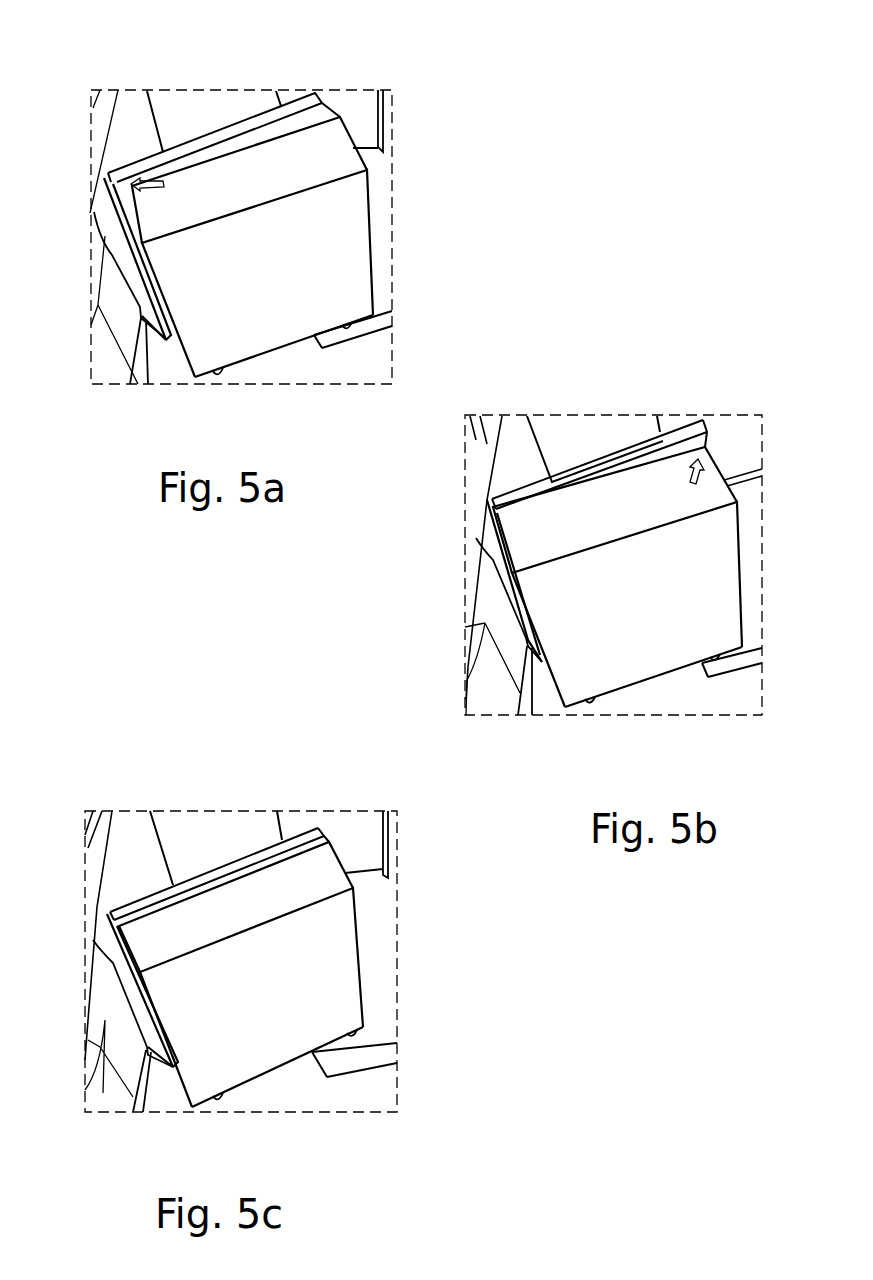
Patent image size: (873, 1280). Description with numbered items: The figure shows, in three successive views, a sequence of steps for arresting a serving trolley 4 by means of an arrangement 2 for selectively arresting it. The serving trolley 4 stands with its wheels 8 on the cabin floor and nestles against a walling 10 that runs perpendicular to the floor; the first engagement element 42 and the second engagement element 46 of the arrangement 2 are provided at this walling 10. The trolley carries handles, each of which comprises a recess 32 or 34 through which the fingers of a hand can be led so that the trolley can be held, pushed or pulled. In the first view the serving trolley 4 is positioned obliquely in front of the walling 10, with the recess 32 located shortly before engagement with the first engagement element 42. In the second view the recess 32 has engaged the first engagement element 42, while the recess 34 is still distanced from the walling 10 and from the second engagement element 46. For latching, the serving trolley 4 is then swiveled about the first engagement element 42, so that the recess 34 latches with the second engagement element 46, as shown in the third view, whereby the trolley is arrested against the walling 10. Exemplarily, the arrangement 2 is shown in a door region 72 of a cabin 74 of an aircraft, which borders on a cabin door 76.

In FIG. 5A, the arrangement 2 is at (362, 104).
In FIG. 5B, the arrangement 2 is at (731, 437).
In FIG. 5C, the arrangement 2 is at (308, 821).
In FIG. 5A, the serving trolley 4 is at (358, 236).
In FIG. 5B, the serving trolley 4 is at (727, 573).
In FIG. 5C, the serving trolley 4 is at (350, 963).
In FIG. 5A, the wheels 8 is at (218, 378).
In FIG. 5B, the wheels 8 is at (590, 708).
In FIG. 5C, the wheels 8 is at (219, 1103).
In FIG. 5A, the walling 10 is at (122, 138).
In FIG. 5B, the walling 10 is at (505, 471).
In FIG. 5C, the walling 10 is at (127, 871).
In FIG. 5A, the recess 32 is at (122, 193).
In FIG. 5B, the recess 32 is at (505, 525).
In FIG. 5C, the recess 32 is at (113, 931).
In FIG. 5A, the recess 34 is at (362, 135).
In FIG. 5B, the recess 34 is at (730, 471).
In FIG. 5C, the recess 34 is at (350, 865).
In FIG. 5A, the first engagement element 42 is at (112, 180).
In FIG. 5B, the first engagement element 42 is at (488, 503).
In FIG. 5C, the first engagement element 42 is at (104, 912).
In FIG. 5B, the second engagement element 46 is at (708, 414).
In FIG. 5C, the second engagement element 46 is at (331, 828).
In FIG. 5A, the door region 72 is at (291, 357).
In FIG. 5B, the door region 72 is at (695, 688).
In FIG. 5C, the door region 72 is at (302, 1083).
In FIG. 5A, the cabin 74 is at (384, 315).
In FIG. 5B, the cabin 74 is at (748, 653).
In FIG. 5C, the cabin 74 is at (375, 1058).
In FIG. 5A, the cabin door 76 is at (96, 287).
In FIG. 5B, the cabin door 76 is at (478, 600).
In FIG. 5C, the cabin door 76 is at (113, 1027).